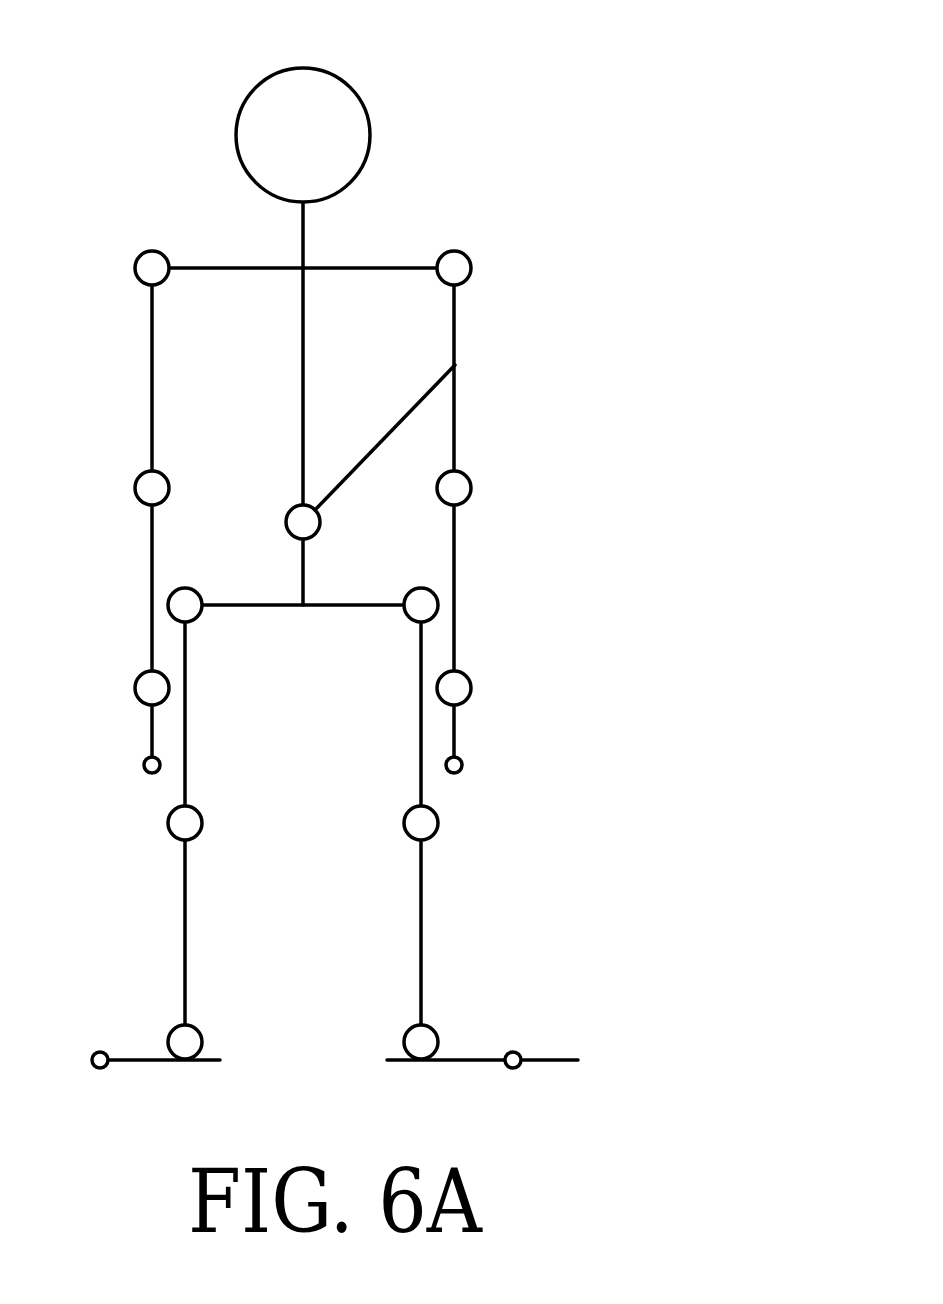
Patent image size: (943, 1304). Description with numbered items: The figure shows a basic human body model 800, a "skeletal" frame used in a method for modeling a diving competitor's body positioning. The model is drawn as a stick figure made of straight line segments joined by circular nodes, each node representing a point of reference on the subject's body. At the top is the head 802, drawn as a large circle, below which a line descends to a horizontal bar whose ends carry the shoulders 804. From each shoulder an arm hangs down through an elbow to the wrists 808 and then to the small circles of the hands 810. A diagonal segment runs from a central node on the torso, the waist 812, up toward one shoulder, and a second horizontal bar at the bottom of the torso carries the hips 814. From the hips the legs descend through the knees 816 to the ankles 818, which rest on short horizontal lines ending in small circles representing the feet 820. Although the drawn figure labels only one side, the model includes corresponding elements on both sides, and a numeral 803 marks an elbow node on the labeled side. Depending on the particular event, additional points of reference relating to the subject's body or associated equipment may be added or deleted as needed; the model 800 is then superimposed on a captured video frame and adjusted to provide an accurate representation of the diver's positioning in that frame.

The basic human body model 800 is at (144, 58).
The head 802 is at (370, 137).
The right elbow joint 803 is at (471, 488).
The shoulders 804 is at (471, 268).
The wrists 808 is at (471, 688).
The hands 810 is at (462, 766).
The waist 812 is at (455, 365).
The hips 814 is at (438, 605).
The knees 816 is at (438, 826).
The ankles 818 is at (438, 1042).
The feet 820 is at (578, 1060).